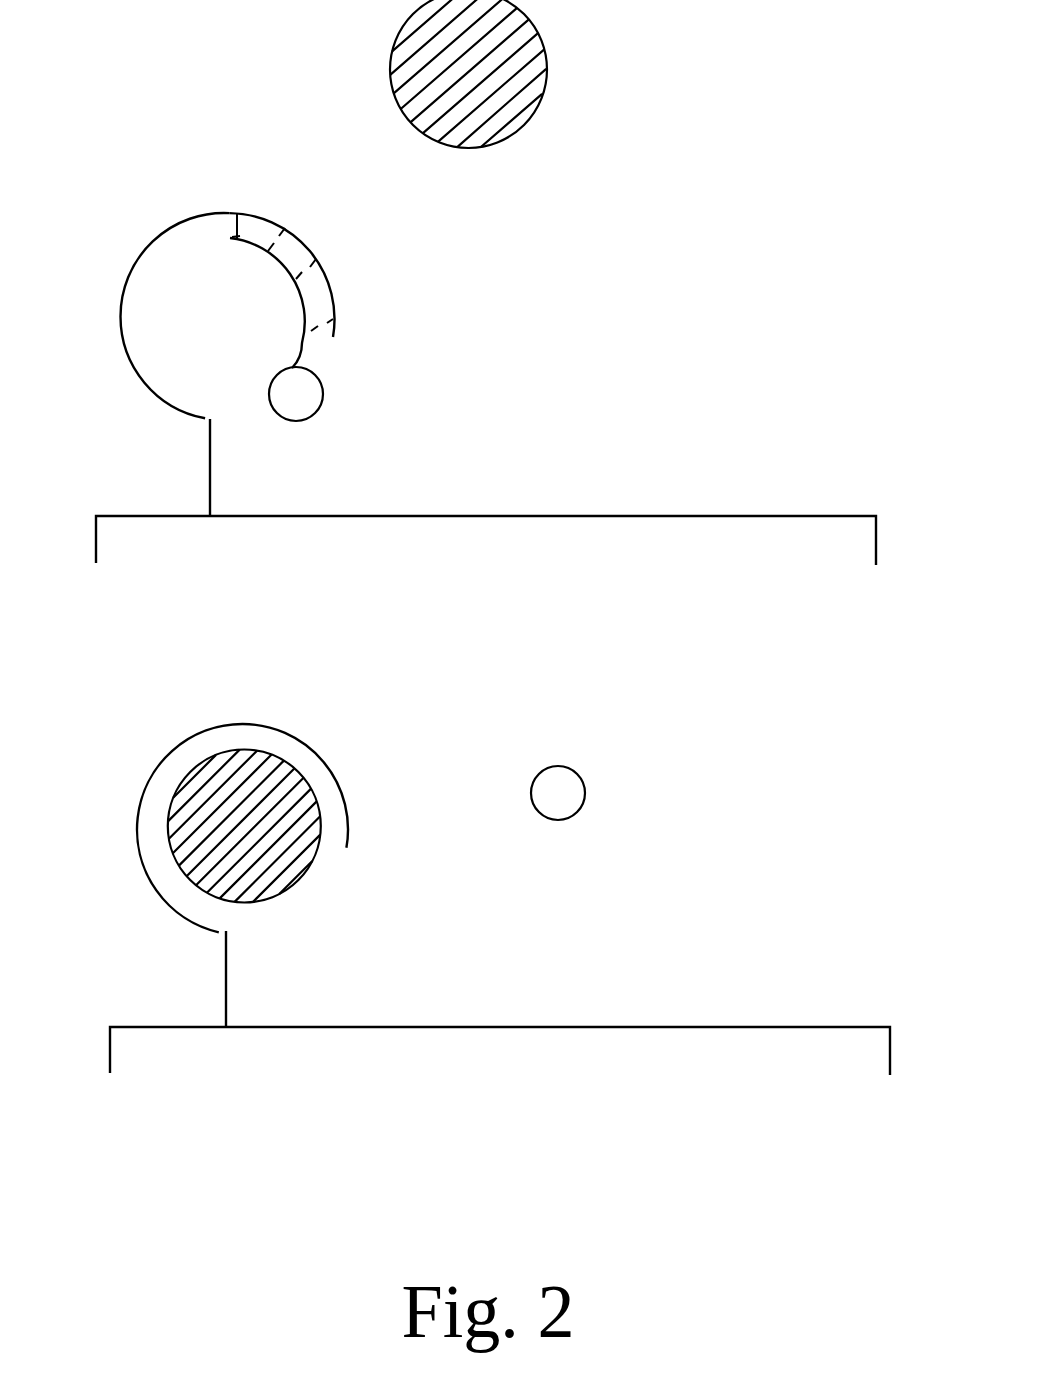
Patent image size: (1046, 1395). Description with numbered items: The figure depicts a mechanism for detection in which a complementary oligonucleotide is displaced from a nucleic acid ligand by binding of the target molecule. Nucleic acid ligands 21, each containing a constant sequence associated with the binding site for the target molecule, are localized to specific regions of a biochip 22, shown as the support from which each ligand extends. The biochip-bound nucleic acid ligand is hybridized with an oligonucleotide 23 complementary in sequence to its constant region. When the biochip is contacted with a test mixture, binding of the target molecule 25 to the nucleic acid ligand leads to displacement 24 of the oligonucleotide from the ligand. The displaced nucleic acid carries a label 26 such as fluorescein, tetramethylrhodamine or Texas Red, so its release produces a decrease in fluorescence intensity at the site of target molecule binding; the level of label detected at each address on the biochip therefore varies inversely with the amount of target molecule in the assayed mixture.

The nucleic acid ligand 21 is at (196, 364).
The biochip 22 is at (523, 540).
The oligonucleotide 23 is at (281, 290).
The displacement 24 is at (547, 773).
The target molecule 25 is at (252, 875).
The label 26 is at (579, 806).